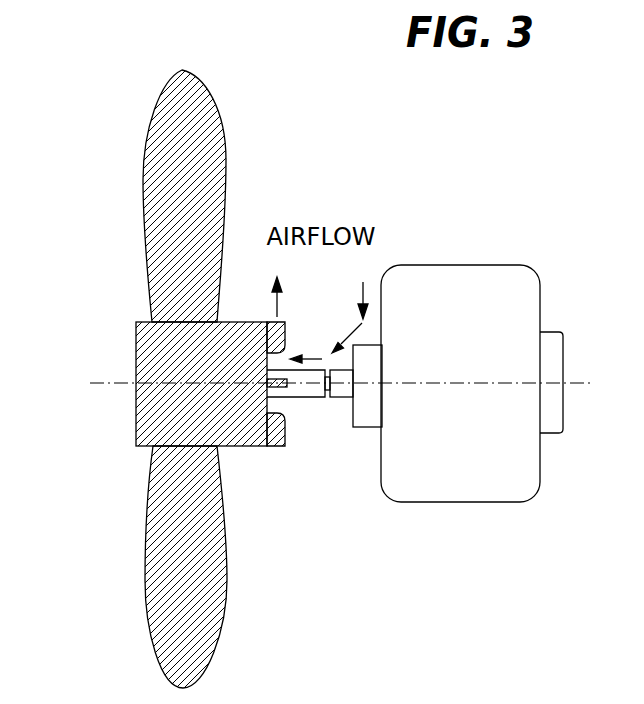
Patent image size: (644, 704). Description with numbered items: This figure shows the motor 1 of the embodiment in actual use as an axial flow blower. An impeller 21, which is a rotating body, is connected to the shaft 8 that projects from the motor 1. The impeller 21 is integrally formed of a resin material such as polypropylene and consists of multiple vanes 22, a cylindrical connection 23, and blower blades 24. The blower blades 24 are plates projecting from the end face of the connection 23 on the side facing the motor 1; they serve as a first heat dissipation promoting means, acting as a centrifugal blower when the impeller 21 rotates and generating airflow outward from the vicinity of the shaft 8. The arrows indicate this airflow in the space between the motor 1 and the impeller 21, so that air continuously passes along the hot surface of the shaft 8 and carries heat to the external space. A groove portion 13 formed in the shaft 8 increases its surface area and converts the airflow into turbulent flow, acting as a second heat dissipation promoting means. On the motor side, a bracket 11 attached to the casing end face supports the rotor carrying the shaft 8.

The motor 1 is at (473, 265).
The shaft 8 is at (302, 397).
The bracket 11 is at (365, 402).
The groove portion 13 is at (330, 397).
The impeller 21 is at (157, 379).
The vanes 22 is at (165, 160).
The connection 23 is at (160, 427).
The blower blades 24 is at (277, 446).